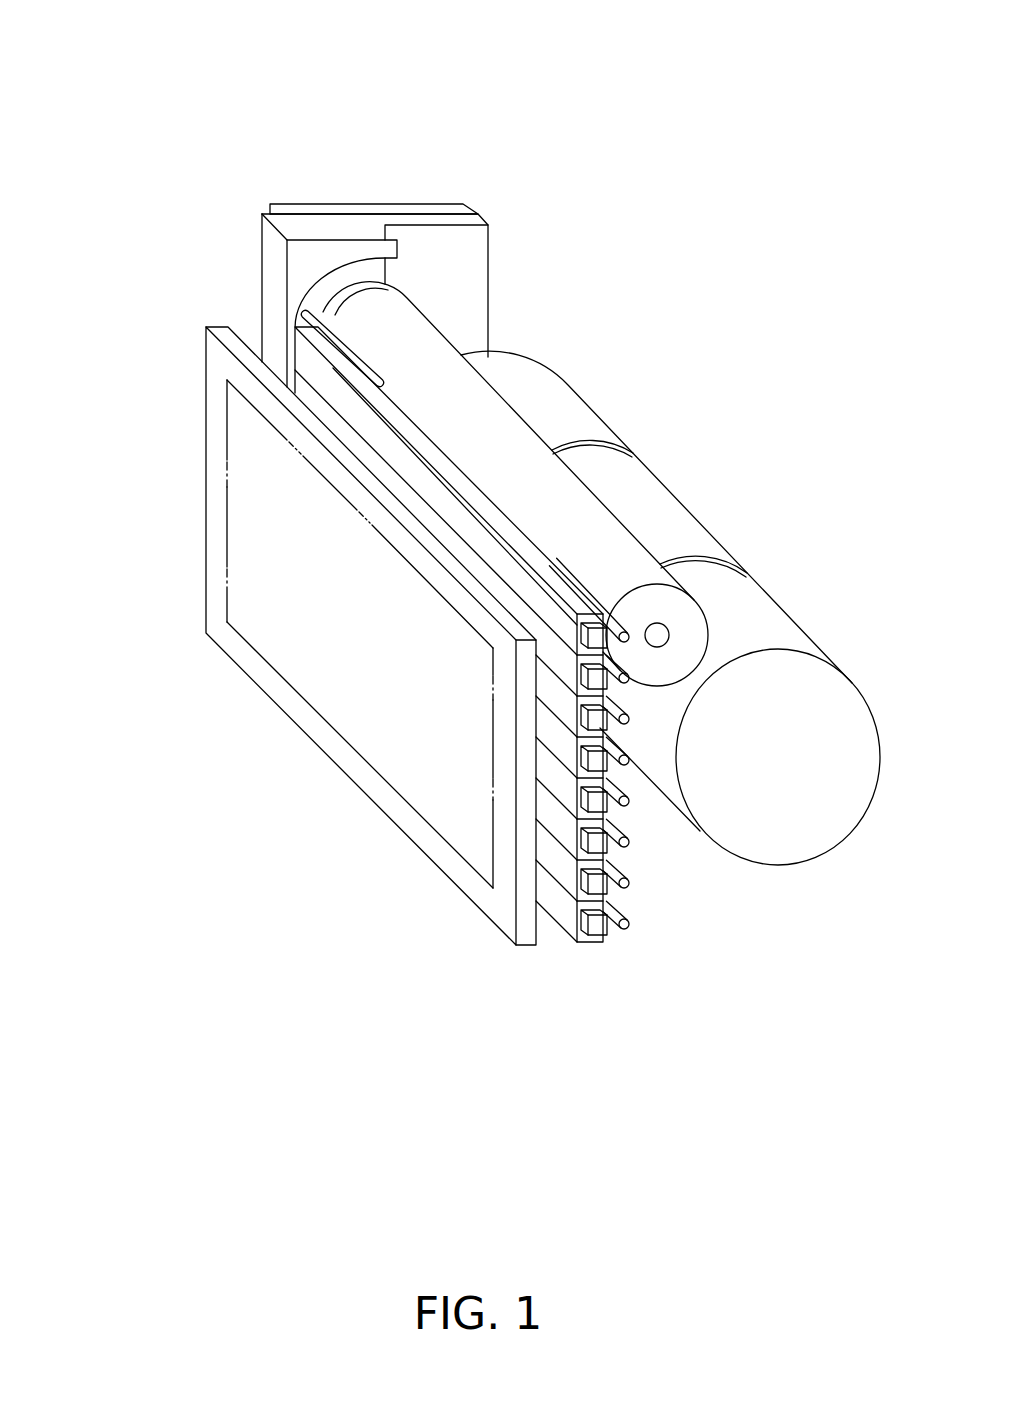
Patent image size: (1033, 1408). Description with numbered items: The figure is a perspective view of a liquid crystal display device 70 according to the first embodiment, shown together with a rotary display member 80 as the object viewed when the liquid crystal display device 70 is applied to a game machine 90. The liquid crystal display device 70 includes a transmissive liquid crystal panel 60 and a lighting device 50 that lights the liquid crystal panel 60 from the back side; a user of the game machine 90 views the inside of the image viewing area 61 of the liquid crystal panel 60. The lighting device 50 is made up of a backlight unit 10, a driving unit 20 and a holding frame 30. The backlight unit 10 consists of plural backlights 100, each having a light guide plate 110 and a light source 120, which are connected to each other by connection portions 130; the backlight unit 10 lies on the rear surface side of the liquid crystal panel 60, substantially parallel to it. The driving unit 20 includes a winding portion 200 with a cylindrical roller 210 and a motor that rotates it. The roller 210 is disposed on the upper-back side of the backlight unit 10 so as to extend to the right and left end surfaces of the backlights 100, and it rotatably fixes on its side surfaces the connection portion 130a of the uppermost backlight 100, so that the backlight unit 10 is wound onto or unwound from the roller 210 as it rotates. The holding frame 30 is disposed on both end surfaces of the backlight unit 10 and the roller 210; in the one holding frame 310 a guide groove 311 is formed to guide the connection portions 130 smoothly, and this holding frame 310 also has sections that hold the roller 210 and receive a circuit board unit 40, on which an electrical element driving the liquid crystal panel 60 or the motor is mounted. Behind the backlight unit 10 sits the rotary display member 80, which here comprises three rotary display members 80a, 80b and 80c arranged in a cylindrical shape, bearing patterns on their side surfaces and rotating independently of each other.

The backlight unit 10 is at (653, 848).
The driving unit 20 is at (598, 230).
The holding frame 30 is at (448, 145).
The circuit board unit 40 is at (297, 210).
The lighting device 50 is at (395, 88).
The liquid crystal panel 60 is at (206, 440).
The image viewing area 61 is at (227, 488).
The liquid crystal display device 70 is at (167, 322).
The rotary display member 80 is at (661, 379).
The rotary display member 80a is at (590, 409).
The rotary display member 80b is at (681, 500).
The rotary display member 80c is at (787, 604).
The game machine 90 is at (560, 77).
The backlight 100 is at (523, 998).
The light guide plate 110 is at (556, 907).
The light source 120 is at (605, 930).
The connection portion 130 is at (632, 919).
The connection portion 130a is at (380, 382).
The winding portion 200 is at (562, 298).
The roller 210 is at (417, 337).
The holding frame 310 is at (417, 222).
The guide groove 311 is at (357, 272).